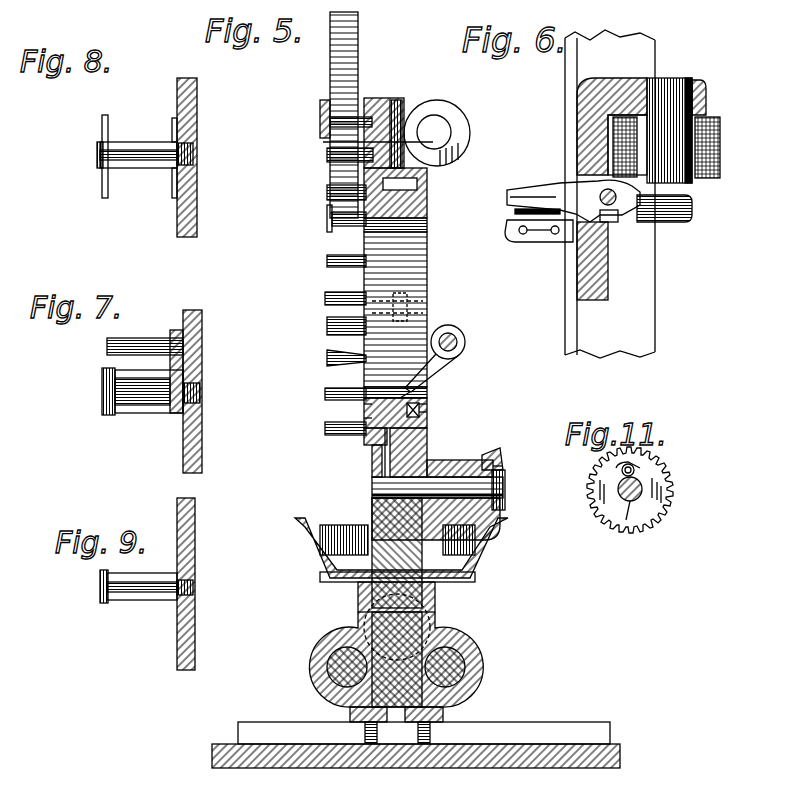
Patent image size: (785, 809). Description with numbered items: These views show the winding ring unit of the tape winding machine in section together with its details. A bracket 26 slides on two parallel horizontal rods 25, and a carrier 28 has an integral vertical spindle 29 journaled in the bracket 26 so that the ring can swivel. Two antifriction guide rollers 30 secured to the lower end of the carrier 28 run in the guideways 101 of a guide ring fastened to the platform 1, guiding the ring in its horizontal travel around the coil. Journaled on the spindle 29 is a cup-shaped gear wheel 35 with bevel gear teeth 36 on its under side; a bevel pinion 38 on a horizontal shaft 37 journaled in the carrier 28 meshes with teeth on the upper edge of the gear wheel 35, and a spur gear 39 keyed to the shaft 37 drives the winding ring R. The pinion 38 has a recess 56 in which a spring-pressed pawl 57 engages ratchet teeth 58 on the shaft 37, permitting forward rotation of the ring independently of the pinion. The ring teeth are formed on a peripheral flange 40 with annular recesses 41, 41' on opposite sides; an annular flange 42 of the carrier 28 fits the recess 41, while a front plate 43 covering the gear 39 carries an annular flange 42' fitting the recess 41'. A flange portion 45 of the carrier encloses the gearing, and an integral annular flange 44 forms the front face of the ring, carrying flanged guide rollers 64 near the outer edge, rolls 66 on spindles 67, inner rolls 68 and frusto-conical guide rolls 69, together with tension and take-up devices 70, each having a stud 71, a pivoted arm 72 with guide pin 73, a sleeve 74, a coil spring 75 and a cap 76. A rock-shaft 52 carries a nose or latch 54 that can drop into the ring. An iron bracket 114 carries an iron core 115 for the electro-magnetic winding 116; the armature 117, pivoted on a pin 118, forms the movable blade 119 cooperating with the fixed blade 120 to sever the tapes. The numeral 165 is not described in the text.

In FIG. 5, the platform 1 is at (218, 768).
In FIG. 5, the guideways 101 is at (515, 722).
In FIG. 5, the horizontal rods 25 is at (335, 667).
In FIG. 5, the bracket 26 is at (328, 645).
In FIG. 5, the carrier 28 is at (427, 198).
In FIG. 5, the vertical spindle 29 is at (437, 643).
In FIG. 5, the antifriction guide rollers 30 is at (362, 730).
In FIG. 5, the cup-shaped gear wheel 35 is at (312, 548).
In FIG. 5, the bevel gear teeth 36 is at (462, 580).
In FIG. 5, the horizontal shaft 37 is at (505, 490).
In FIG. 11, the horizontal shaft 37 is at (612, 496).
In FIG. 5, the bevel pinion 38 is at (490, 456).
In FIG. 11, the bevel pinion 38 is at (655, 505).
In FIG. 5, the spur gear 39 is at (384, 455).
In FIG. 5, the peripheral flange 40 is at (425, 415).
In FIG. 5, the annular recess 41 is at (459, 386).
In FIG. 5, the annular flange 42 is at (459, 399).
In FIG. 5, the annular recess 41' is at (336, 410).
In FIG. 5, the annular flange 42' is at (332, 429).
In FIG. 5, the front plate 43 is at (326, 210).
In FIG. 5, the annular flange 44 is at (362, 184).
In FIG. 8, the annular flange 44 is at (197, 112).
In FIG. 7, the annular flange 44 is at (200, 330).
In FIG. 9, the annular flange 44 is at (195, 535).
In FIG. 5, the flange portion 45 is at (425, 170).
In FIG. 5, the rock-shaft 52 is at (460, 331).
In FIG. 5, the nose or latch 54 is at (432, 396).
In FIG. 11, the recess 56 is at (636, 476).
In FIG. 5, the spring-pressed pawl 57 is at (500, 470).
In FIG. 11, the spring-pressed pawl 57 is at (638, 470).
In FIG. 11, the ratchet teeth 58 is at (626, 520).
In FIG. 8, the flanged guide rollers 64 is at (108, 145).
In FIG. 8, the screw 165 is at (117, 156).
In FIG. 5, the rolls 66 is at (353, 298).
In FIG. 9, the rolls 66 is at (145, 600).
In FIG. 9, the spindles 67 is at (130, 586).
In FIG. 5, the rolls 68 is at (353, 262).
In FIG. 5, the frusto-conical guide rolls 69 is at (337, 364).
In FIG. 5, the tension and take-up devices 70 is at (336, 338).
In FIG. 7, the tension and take-up devices 70 is at (105, 362).
In FIG. 7, the stud or pin 71 is at (200, 395).
In FIG. 7, the arm 72 is at (195, 372).
In FIG. 7, the guide pin 73 is at (118, 340).
In FIG. 7, the sleeve 74 is at (160, 414).
In FIG. 7, the coil spring 75 is at (125, 413).
In FIG. 7, the cap 76 is at (103, 398).
In FIG. 5, the winding ring R is at (413, 292).
In FIG. 5, the iron bracket 114 is at (388, 106).
In FIG. 6, the iron bracket 114 is at (600, 99).
In FIG. 6, the iron core 115 is at (680, 95).
In FIG. 6, the electro-magnetic winding 116 is at (718, 140).
In FIG. 6, the armature 117 is at (692, 208).
In FIG. 6, the pin 118 is at (612, 222).
In FIG. 6, the movable blade 119 is at (532, 190).
In FIG. 6, the fixed blade 120 is at (540, 235).